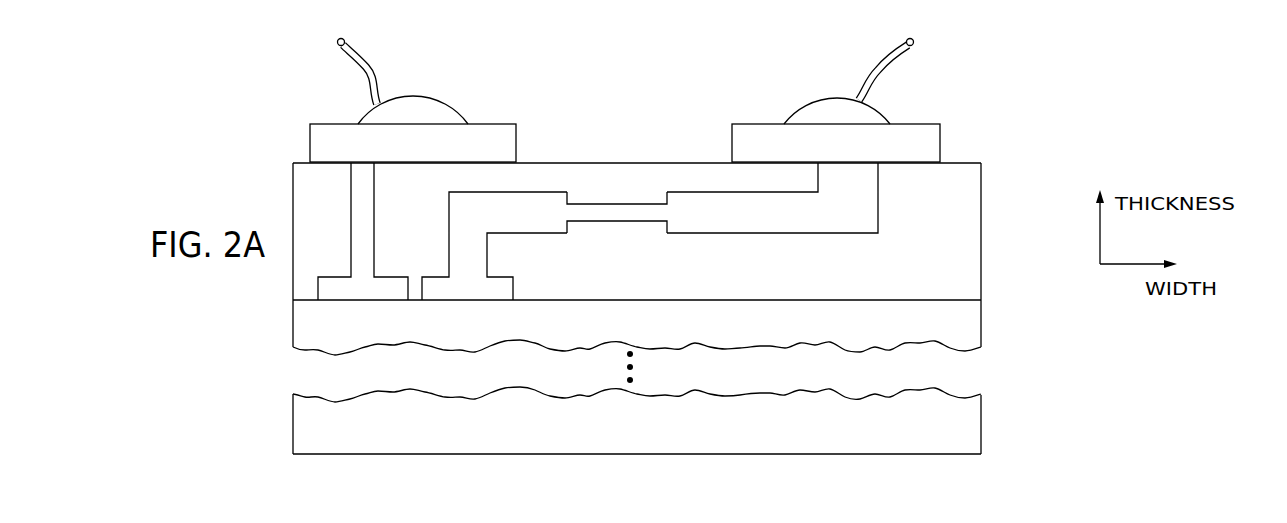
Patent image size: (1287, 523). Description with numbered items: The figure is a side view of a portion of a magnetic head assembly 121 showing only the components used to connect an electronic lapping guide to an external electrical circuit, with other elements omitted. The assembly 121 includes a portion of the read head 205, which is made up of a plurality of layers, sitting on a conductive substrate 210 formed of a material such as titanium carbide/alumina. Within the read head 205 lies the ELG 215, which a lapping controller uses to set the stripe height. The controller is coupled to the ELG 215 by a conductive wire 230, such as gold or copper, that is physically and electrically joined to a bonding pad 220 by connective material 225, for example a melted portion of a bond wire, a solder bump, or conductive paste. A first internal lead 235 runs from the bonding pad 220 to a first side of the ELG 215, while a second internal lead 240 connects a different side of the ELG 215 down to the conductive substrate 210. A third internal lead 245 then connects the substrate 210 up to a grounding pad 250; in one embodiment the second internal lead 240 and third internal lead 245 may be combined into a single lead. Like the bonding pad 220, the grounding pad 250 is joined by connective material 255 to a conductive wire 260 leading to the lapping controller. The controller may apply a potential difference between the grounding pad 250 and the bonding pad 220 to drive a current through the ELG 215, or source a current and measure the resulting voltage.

The magnetic head assembly 121 is at (1034, 176).
The read head 205 is at (995, 163).
The conductive substrate 210 is at (995, 453).
The ELG 215 is at (598, 205).
The bonding pad 220 is at (836, 143).
The connective material 225 is at (806, 100).
The conductive wire 230 is at (878, 83).
The first internal lead 235 is at (802, 236).
The second internal lead 240 is at (466, 192).
The third internal lead 245 is at (374, 250).
The grounding pad 250 is at (310, 148).
The connective material 255 is at (448, 98).
The conductive wire 260 is at (372, 82).